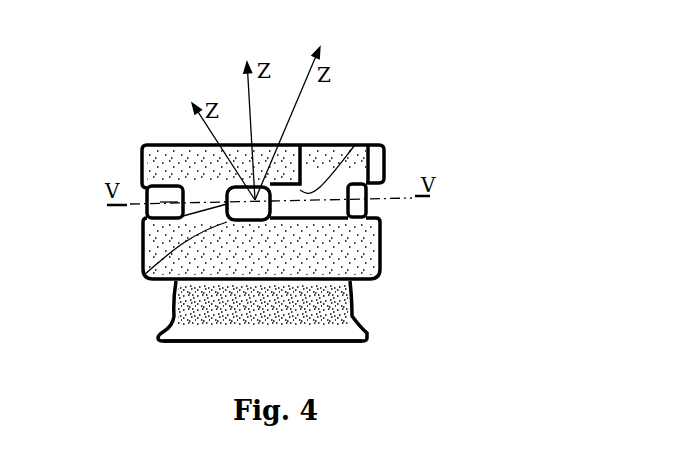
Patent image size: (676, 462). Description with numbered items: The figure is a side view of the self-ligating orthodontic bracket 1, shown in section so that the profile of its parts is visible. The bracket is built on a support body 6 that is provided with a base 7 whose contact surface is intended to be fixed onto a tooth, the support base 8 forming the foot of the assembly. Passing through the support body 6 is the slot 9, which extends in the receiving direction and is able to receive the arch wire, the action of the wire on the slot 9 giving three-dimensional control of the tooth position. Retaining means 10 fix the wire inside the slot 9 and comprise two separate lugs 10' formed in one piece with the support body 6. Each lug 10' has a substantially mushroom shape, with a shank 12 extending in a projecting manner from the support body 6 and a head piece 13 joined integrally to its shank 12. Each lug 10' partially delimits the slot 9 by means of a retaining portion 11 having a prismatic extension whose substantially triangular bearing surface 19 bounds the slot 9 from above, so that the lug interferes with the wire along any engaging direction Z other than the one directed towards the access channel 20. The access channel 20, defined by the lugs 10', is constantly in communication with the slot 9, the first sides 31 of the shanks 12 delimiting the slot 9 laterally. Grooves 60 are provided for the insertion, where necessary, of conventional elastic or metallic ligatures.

The self-ligating orthodontic bracket 1 is at (401, 127).
The support body 6 is at (450, 213).
The base 7 is at (335, 314).
The support base 8 is at (285, 340).
The slot 9 is at (144, 276).
The retaining means 10 is at (328, 203).
The lug 10' is at (260, 114).
The retaining portion 11 is at (280, 163).
The shank 12 is at (150, 199).
The head piece 13 is at (152, 160).
The bearing surface 19 is at (355, 145).
The access channel 20 is at (338, 197).
The first side 31 is at (142, 248).
The groove 60 is at (152, 216).